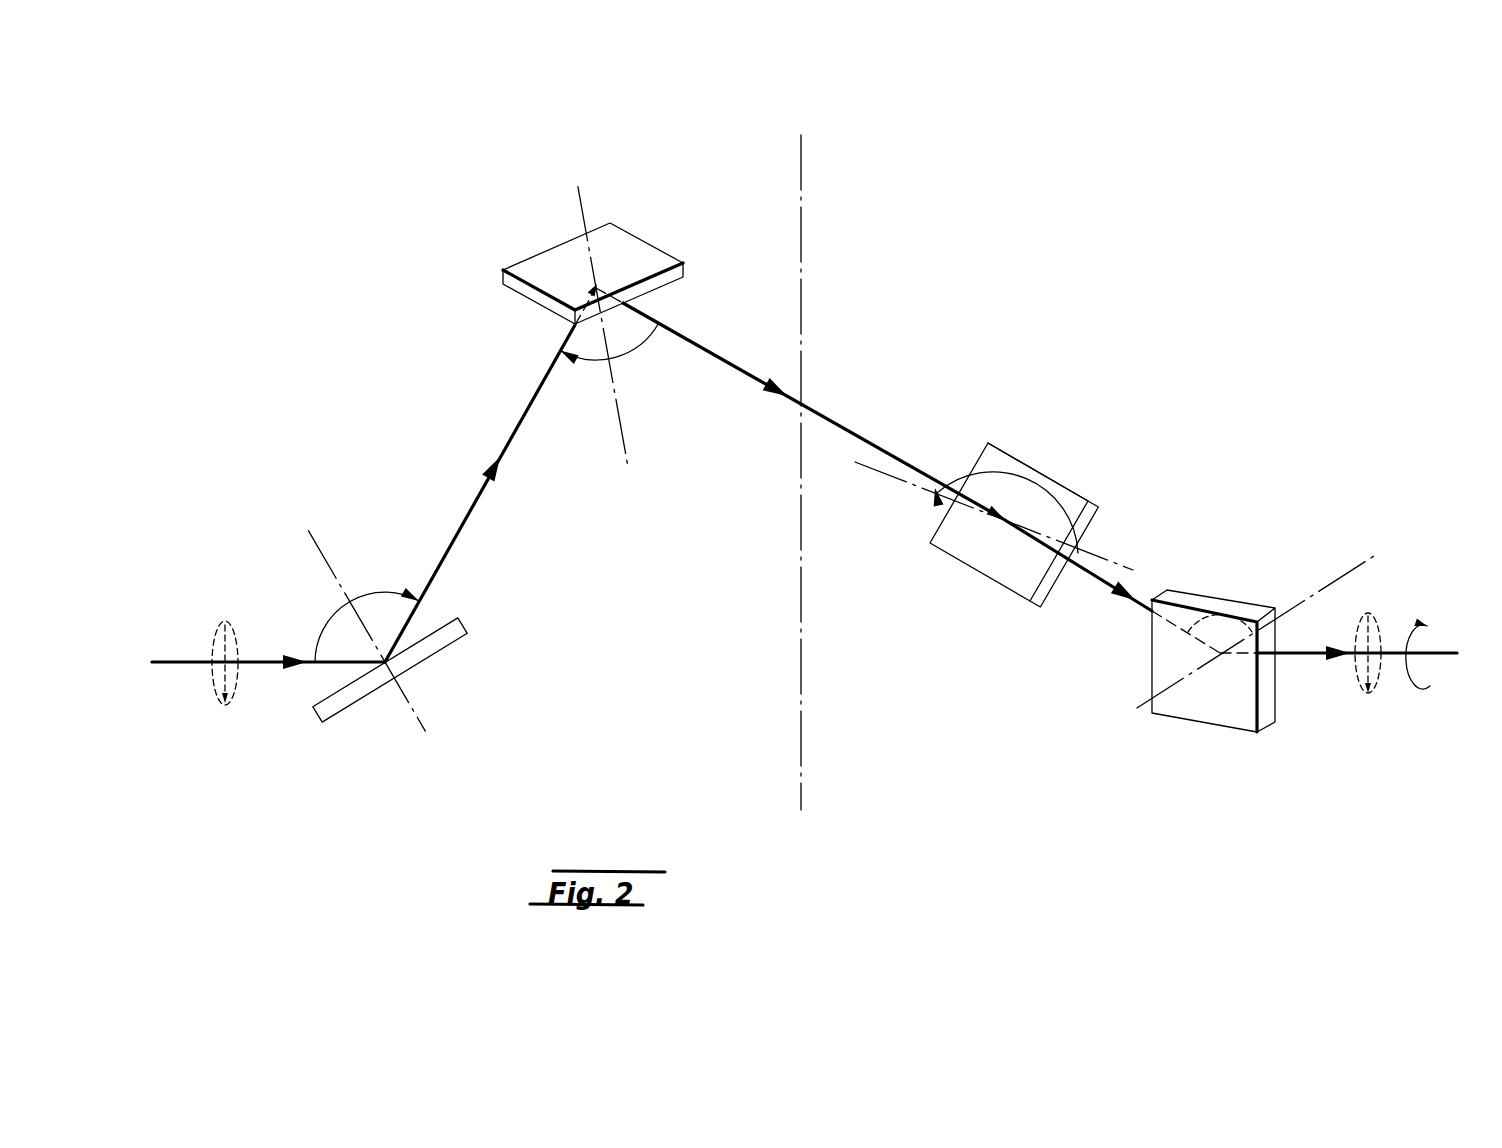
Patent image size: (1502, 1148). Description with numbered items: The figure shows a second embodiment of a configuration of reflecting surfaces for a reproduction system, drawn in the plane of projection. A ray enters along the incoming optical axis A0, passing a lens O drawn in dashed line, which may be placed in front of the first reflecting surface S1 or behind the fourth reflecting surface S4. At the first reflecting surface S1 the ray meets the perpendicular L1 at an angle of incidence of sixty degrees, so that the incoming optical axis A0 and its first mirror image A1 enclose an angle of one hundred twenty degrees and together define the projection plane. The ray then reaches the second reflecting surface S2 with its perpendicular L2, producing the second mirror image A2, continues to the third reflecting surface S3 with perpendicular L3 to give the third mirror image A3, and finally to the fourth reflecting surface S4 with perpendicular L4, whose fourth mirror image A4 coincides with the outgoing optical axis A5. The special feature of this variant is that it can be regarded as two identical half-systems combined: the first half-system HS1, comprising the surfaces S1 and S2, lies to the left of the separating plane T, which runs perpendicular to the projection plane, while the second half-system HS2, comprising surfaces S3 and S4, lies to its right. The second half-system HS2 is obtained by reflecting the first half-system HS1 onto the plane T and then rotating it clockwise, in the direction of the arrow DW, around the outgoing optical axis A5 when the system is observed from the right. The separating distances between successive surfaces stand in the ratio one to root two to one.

The separating plane T is at (802, 168).
The first half-system HS1 is at (378, 322).
The second half-system HS2 is at (1226, 341).
The lens O is at (213, 688).
The incoming optical axis A0 is at (267, 664).
The first mirror image of the incoming optical axis A1 is at (466, 523).
The second mirror image of the incoming optical axis A2 is at (731, 361).
The third mirror image of the incoming optical axis A3 is at (1110, 588).
The fourth mirror image of the incoming optical axis A4 is at (1318, 657).
The outgoing optical axis A5 is at (1457, 657).
The first reflecting surface S1 is at (348, 697).
The second reflecting surface S2 is at (558, 260).
The third reflecting surface S3 is at (1031, 483).
The fourth reflecting surface S4 is at (1222, 708).
The perpendicular to the first reflecting surface L1 is at (316, 540).
The perpendicular to the second reflecting surface L2 is at (626, 450).
The perpendicular to the third reflecting surface L3 is at (873, 470).
The perpendicular to the fourth reflecting surface L4 is at (1337, 583).
The arrow indicating direction of rotation DW is at (1420, 617).